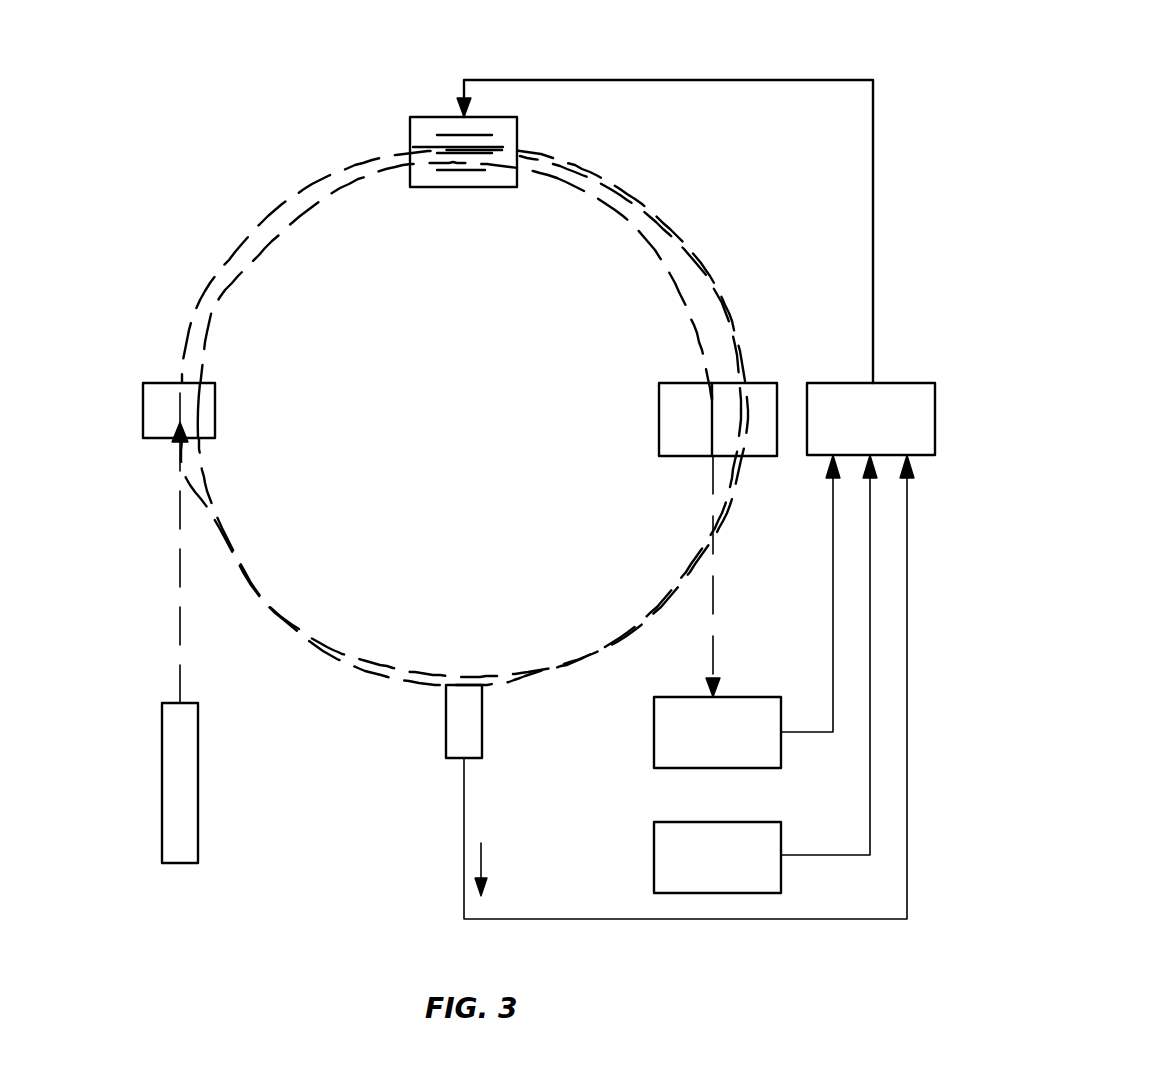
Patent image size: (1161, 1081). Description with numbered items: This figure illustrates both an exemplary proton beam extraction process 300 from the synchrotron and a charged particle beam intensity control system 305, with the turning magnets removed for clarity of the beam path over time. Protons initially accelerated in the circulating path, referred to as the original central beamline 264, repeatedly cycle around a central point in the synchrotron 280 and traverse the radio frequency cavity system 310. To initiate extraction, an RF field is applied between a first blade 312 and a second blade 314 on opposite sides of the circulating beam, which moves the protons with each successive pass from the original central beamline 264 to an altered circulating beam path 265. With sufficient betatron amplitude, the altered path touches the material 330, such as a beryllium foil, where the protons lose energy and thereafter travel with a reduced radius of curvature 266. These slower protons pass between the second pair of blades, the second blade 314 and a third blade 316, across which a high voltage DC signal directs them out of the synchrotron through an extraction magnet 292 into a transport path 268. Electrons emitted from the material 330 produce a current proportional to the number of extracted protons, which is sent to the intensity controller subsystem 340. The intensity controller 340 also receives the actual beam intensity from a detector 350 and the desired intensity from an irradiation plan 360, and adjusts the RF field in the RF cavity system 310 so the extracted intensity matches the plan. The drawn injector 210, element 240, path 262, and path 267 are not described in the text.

The proton beam extraction process 300 is at (730, 40).
The charged particle beam intensity control system 305 is at (486, 638).
The radio frequency (RF) cavity system 310 is at (454, 148).
The first blade 312 is at (447, 133).
The second blade 314 is at (437, 148).
The third blade 316 is at (452, 172).
The injection inflector 240 is at (172, 383).
The injection beam path 262 is at (183, 630).
The injector 210 is at (198, 848).
The original central beamline 264 is at (241, 248).
The altered circulating beam path 265 is at (677, 233).
The reduced radius of curvature 266 is at (236, 297).
The extraction orbit 267 is at (683, 301).
The transport path 268 is at (717, 607).
The central point in the synchrotron 280 is at (461, 411).
The extraction magnet 292 is at (758, 383).
The material 330 is at (483, 745).
The intensity controller subsystem 340 is at (893, 383).
The detector 350 is at (745, 697).
The irradiation plan 360 is at (745, 822).